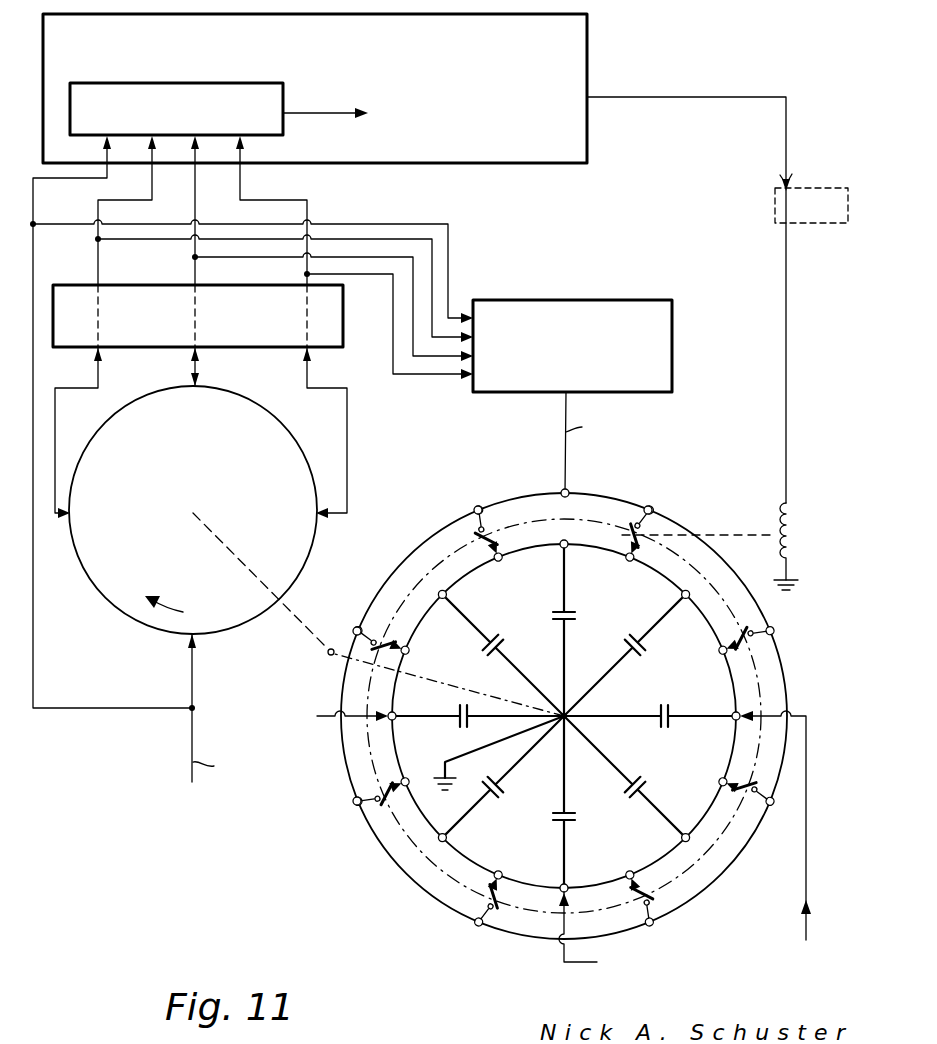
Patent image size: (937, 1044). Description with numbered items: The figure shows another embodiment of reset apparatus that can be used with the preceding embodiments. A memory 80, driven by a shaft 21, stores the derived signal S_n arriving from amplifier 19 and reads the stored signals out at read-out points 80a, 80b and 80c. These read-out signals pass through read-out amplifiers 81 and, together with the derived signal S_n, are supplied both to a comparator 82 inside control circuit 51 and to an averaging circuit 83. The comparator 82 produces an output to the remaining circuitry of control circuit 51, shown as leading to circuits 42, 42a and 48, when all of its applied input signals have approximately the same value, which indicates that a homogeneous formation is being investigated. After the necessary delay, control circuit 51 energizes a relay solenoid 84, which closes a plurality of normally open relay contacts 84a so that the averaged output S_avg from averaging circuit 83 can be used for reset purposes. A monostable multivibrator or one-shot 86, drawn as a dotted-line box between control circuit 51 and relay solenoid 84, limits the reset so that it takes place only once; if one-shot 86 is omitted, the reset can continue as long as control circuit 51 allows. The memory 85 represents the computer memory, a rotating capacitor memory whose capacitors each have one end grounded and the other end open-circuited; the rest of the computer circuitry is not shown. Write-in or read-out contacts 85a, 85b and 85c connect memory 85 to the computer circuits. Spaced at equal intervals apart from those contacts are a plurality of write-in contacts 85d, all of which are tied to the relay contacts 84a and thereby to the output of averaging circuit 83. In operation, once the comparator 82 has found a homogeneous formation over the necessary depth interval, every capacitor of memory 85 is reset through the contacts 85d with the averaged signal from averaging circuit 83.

The control circuit 51 is at (414, 258).
The comparator 82 is at (283, 127).
The read-out amplifiers 81 is at (343, 330).
The averaging circuit 83 is at (672, 373).
The memory 80 is at (204, 497).
The read-out point 80a is at (78, 513).
The read-out point 80b is at (194, 388).
The read-out point 80c is at (306, 513).
The shaft 21 is at (328, 661).
The amplifier 19 is at (189, 738).
The circuit 42 is at (421, 118).
The circuit 42a is at (421, 118).
The circuit 48 is at (421, 118).
The monostable multivibrator (one-shot) 86 is at (775, 198).
The relay solenoid 84 is at (786, 532).
The normally open relay contacts 84a is at (358, 640).
The memory 85 is at (601, 791).
The write-in or read-out contact 85a is at (745, 722).
The write-in or read-out contact 85b is at (580, 880).
The write-in or read-out contact 85c is at (385, 712).
The write-in contacts 85d is at (510, 548).